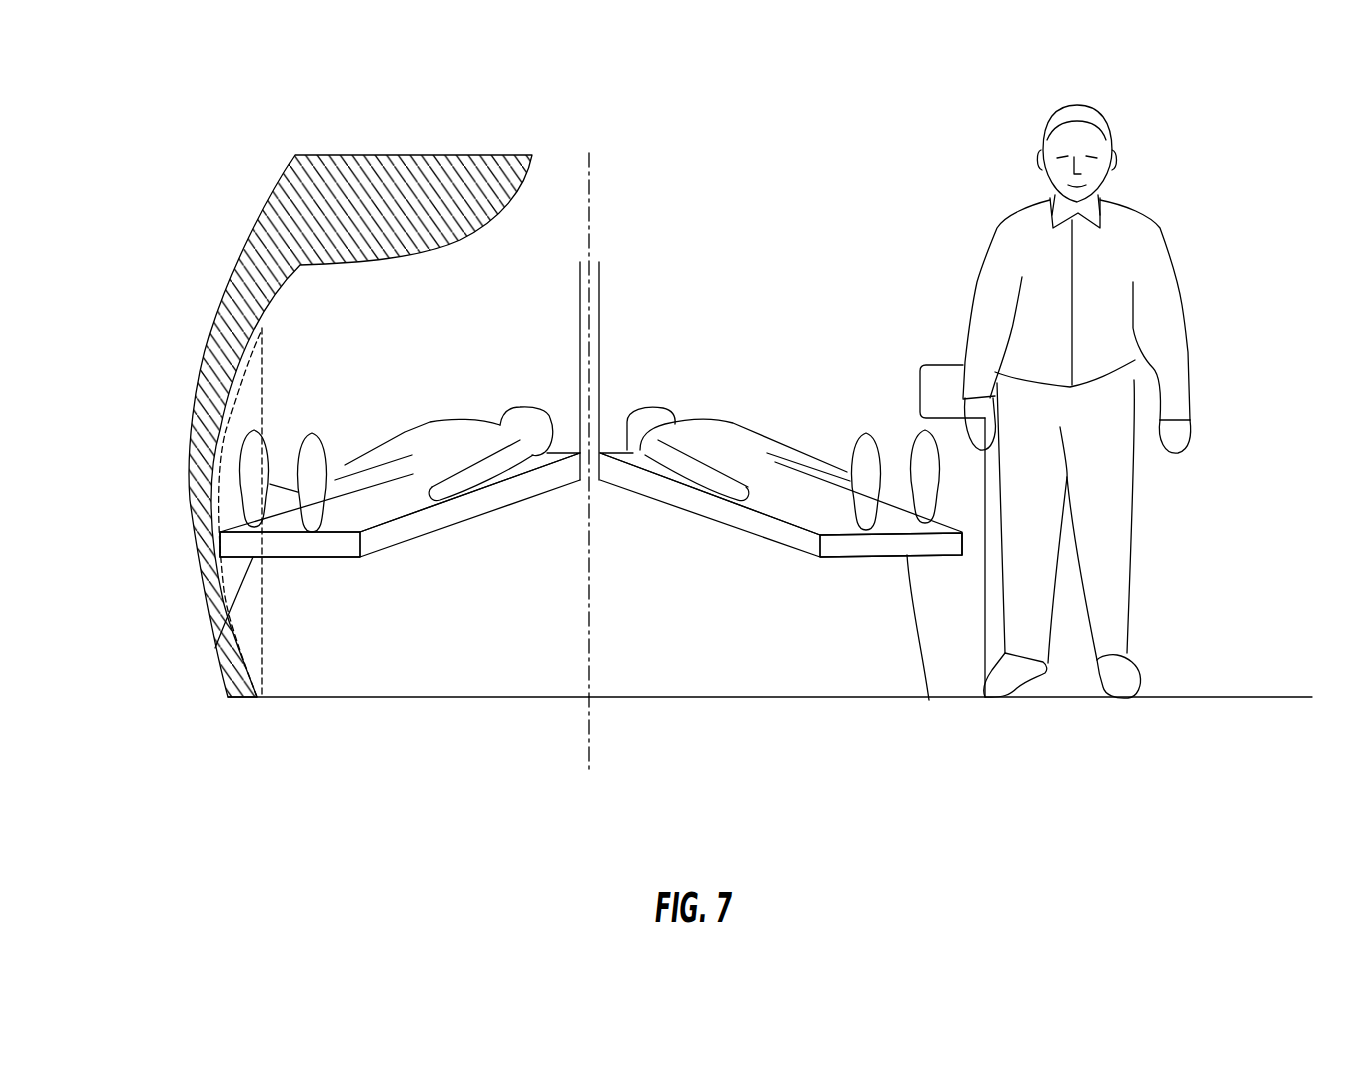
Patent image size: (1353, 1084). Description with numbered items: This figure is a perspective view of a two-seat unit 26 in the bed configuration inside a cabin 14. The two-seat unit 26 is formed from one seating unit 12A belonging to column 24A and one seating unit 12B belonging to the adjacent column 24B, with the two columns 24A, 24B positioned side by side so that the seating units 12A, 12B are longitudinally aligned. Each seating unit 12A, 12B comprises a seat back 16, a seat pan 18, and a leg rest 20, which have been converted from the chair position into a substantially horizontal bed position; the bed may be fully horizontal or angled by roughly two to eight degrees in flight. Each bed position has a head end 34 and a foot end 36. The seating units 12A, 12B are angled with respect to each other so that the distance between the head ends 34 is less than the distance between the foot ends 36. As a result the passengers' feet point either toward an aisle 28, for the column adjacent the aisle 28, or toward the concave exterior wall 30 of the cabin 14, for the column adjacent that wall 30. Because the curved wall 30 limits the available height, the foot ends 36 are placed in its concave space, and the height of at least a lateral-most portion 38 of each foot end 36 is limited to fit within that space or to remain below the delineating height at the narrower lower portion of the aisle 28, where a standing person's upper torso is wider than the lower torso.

The seating unit 12A is at (415, 495).
The seating unit 12B is at (807, 452).
The cabin 14 is at (282, 180).
The seat back 16 is at (537, 484).
The seat pan 18 is at (425, 523).
The leg rest 20 is at (382, 560).
The column 24A is at (398, 698).
The column 24B is at (768, 698).
The two-seat unit 26 is at (625, 234).
The aisle 28 is at (1017, 727).
The exterior wall 30 is at (192, 513).
The head end 34 is at (628, 430).
The foot end 36 is at (222, 633).
The lateral-most portion 38 is at (220, 535).